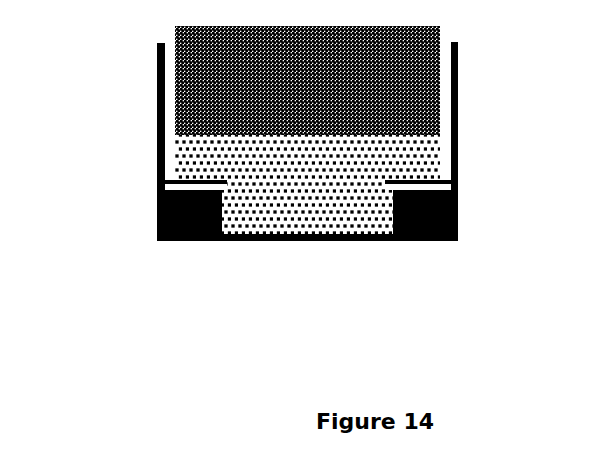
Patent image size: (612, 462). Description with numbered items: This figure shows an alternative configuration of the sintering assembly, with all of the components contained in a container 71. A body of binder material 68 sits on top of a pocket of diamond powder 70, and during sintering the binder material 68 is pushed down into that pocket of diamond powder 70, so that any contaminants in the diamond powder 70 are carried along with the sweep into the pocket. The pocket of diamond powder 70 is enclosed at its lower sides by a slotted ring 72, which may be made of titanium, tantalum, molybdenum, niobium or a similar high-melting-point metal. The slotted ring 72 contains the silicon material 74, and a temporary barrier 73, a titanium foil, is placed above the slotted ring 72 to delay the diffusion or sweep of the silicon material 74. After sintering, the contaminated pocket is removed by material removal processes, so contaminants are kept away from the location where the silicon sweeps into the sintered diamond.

The binder material 68 is at (307, 80).
The diamond powder 70 is at (307, 184).
The container 71 is at (282, 250).
The slotted ring 72 is at (162, 240).
The temporary barrier 73 is at (180, 169).
The silicon material 74 is at (157, 202).